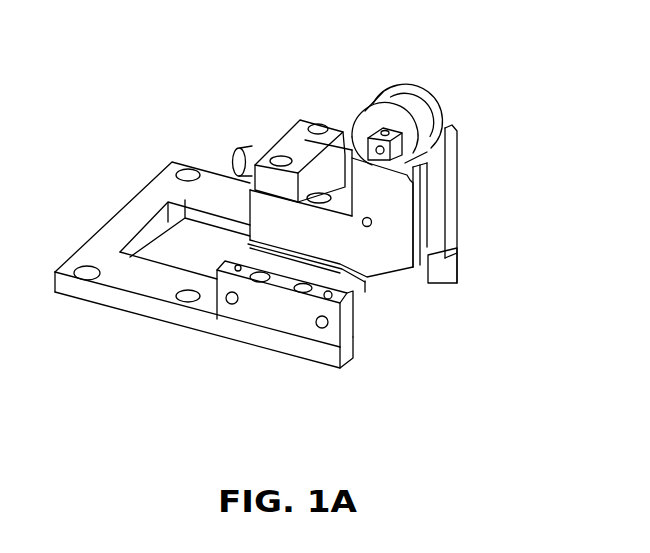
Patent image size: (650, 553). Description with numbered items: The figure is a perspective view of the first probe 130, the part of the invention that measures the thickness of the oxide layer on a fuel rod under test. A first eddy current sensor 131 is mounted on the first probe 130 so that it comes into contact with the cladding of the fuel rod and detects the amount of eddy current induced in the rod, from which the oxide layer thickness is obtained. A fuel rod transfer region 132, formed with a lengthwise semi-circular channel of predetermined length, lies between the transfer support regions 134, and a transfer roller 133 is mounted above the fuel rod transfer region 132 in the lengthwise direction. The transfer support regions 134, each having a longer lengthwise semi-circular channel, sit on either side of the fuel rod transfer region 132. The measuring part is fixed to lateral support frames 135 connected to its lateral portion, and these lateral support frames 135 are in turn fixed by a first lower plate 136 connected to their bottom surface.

The first probe 130 is at (252, 60).
The first eddy current sensor 131 is at (430, 202).
The fuel rod transfer region 132 is at (433, 185).
The transfer roller 133 is at (420, 110).
The transfer support regions 134 is at (380, 310).
The lateral support frames 135 is at (298, 325).
The first lower plate 136 is at (157, 312).